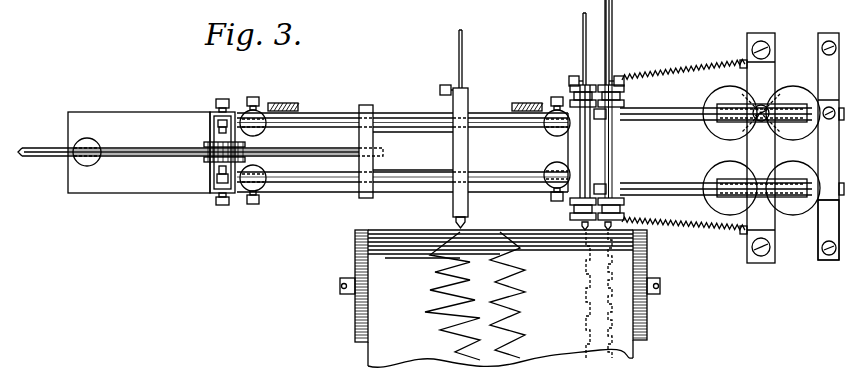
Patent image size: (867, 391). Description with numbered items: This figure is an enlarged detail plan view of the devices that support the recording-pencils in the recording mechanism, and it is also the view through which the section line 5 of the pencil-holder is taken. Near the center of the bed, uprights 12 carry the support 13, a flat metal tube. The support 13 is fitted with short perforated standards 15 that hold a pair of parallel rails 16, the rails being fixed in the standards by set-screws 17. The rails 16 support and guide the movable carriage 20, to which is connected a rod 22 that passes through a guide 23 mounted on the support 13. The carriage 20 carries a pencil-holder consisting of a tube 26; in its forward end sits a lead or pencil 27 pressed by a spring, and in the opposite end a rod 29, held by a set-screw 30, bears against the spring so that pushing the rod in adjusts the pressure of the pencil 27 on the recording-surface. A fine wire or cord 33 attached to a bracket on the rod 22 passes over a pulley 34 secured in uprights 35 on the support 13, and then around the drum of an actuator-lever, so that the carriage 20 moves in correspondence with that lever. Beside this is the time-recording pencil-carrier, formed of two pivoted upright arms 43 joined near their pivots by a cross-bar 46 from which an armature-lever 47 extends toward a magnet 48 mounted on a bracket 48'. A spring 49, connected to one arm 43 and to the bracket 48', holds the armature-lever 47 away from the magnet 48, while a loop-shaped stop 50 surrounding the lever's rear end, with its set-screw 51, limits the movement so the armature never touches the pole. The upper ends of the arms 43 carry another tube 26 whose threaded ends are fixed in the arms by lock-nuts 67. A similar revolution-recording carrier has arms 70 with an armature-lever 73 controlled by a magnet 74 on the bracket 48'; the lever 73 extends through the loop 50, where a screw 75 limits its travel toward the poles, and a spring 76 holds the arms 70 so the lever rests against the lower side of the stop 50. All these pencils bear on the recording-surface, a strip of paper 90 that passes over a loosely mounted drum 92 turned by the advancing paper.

The shaft 5 is at (604, 298).
The uprights 12 is at (289, 103).
The support 13 is at (318, 152).
The perforated standards 15 is at (259, 131).
The parallel rails 16 is at (402, 116).
The set-screws 17 is at (251, 96).
The carriage 20 is at (406, 151).
The rod 22 is at (225, 143).
The guide 23 is at (92, 143).
The tube 26 is at (468, 157).
The pencil 27 is at (467, 226).
The rod 29 is at (463, 72).
The set-screw 30 is at (441, 87).
The wire or cord 33 is at (21, 154).
The pulley 34 is at (207, 161).
The uprights 35 is at (215, 184).
The upright arms 43 is at (571, 89).
The cross-bar 46 is at (580, 150).
The armature-lever 47 is at (673, 187).
The magnet 48 is at (761, 195).
The bracket 48' is at (761, 148).
The spring 49 is at (684, 69).
The stop 50 is at (831, 146).
The set-screw 51 is at (828, 200).
The lock-nuts 67 is at (618, 108).
The arms 70 is at (624, 96).
The armature-lever 73 is at (694, 121).
The magnet 74 is at (791, 88).
The screw 75 is at (826, 119).
The spring 76 is at (727, 231).
The strip of paper 90 is at (493, 298).
The drum 92 is at (649, 298).